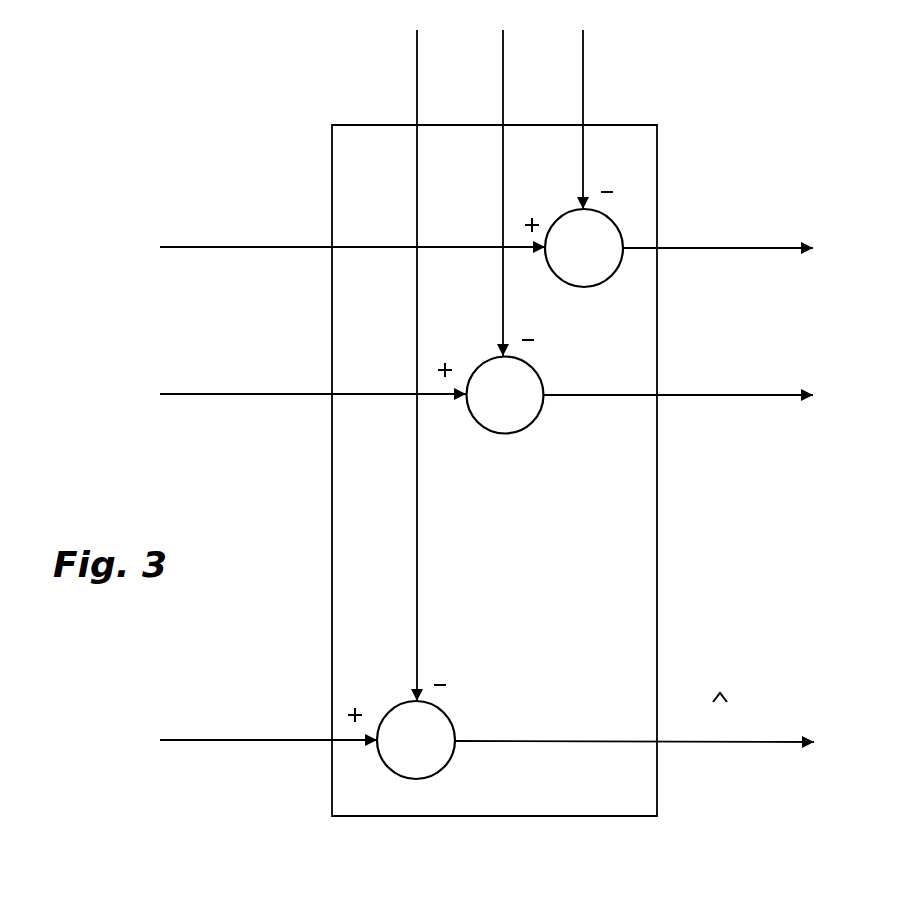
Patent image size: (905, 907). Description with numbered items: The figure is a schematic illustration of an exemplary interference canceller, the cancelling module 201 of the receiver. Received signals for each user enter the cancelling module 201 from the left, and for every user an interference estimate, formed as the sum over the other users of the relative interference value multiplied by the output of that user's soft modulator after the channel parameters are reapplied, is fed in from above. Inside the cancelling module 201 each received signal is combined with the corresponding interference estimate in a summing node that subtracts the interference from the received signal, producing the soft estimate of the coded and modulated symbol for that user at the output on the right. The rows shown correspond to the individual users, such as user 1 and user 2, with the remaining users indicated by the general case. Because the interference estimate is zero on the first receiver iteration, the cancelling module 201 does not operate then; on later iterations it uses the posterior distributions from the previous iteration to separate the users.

The cancelling module 201 is at (227, 140).
The first user channel (R1 estimate, y1 input, x1 output summing node) 1 is at (486, 158).
The second user channel (R2 estimate, y2 input, x2 output summing node) 2 is at (486, 232).